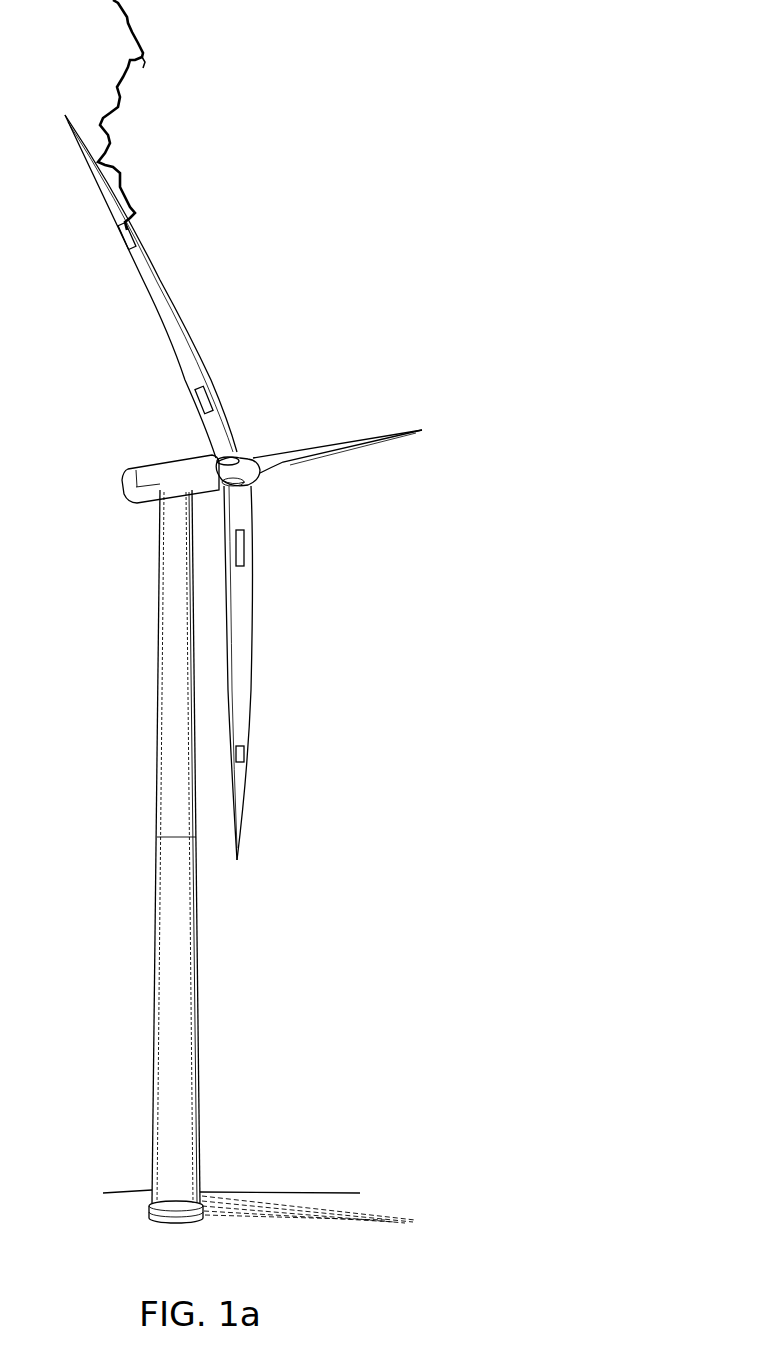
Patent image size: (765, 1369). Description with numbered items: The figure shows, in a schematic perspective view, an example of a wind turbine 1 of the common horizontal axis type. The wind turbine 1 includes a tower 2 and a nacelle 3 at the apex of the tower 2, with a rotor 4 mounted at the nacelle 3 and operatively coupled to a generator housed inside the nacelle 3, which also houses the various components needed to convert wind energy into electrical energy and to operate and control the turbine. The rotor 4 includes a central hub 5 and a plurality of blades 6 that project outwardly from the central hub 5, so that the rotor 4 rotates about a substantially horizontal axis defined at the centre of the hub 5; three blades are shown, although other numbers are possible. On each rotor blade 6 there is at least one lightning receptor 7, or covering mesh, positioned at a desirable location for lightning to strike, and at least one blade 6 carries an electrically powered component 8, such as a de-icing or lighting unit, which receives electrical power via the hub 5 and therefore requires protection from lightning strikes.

The wind turbine 1 is at (378, 290).
The tower 2 is at (173, 702).
The nacelle 3 is at (136, 470).
The rotor 4 is at (260, 484).
The central hub 5 is at (252, 457).
The rotor blade 6 is at (149, 290).
The lightning receptor 7 is at (127, 243).
The electrically powered component 8 is at (200, 404).